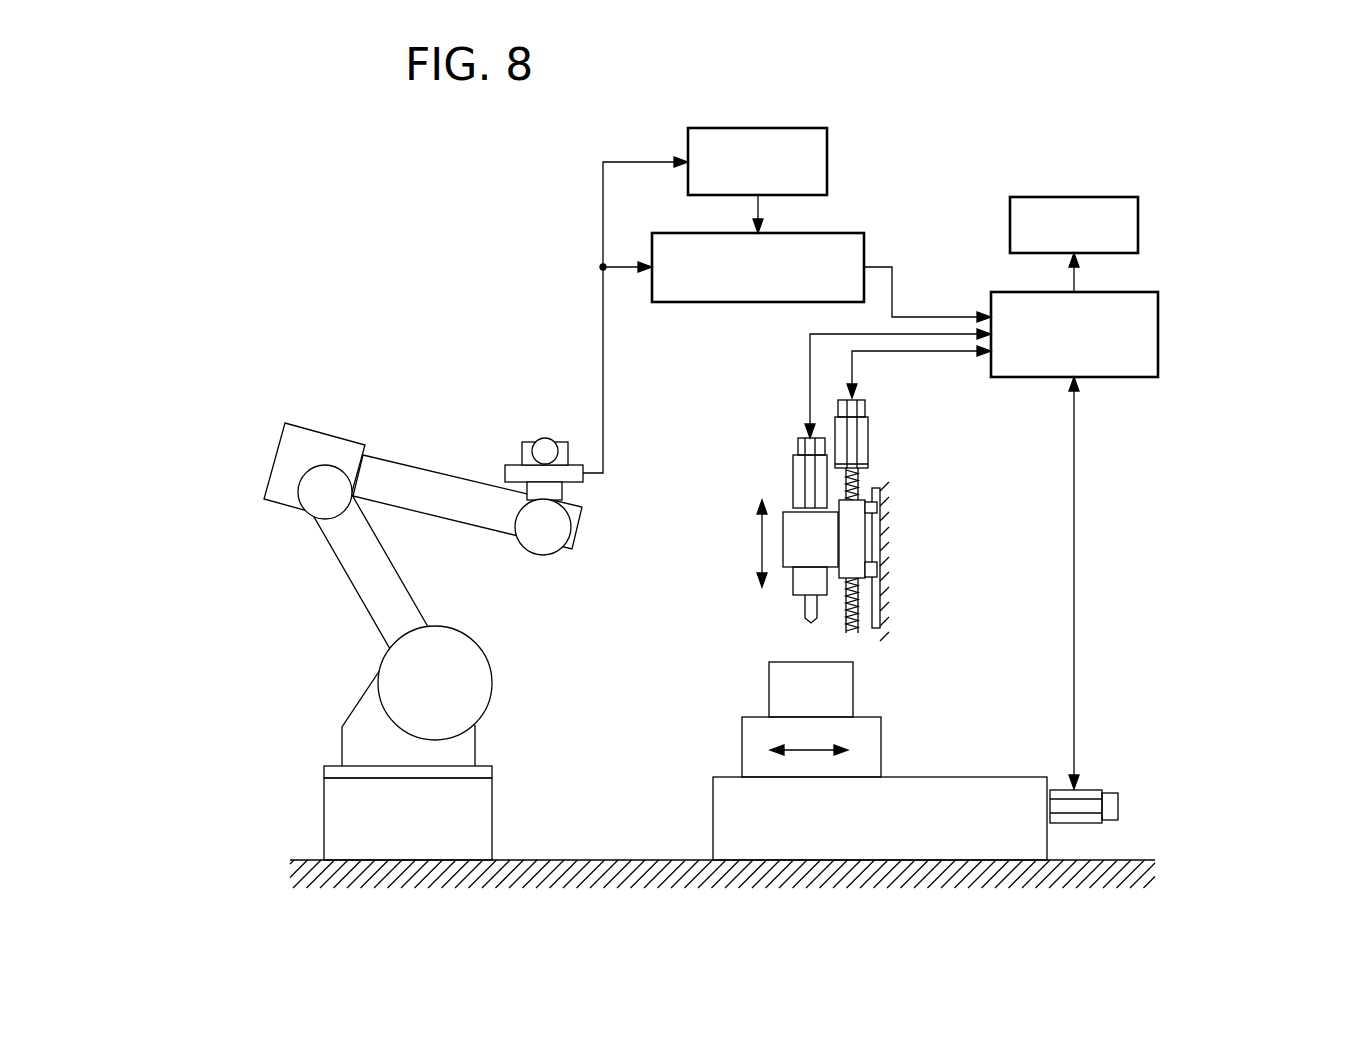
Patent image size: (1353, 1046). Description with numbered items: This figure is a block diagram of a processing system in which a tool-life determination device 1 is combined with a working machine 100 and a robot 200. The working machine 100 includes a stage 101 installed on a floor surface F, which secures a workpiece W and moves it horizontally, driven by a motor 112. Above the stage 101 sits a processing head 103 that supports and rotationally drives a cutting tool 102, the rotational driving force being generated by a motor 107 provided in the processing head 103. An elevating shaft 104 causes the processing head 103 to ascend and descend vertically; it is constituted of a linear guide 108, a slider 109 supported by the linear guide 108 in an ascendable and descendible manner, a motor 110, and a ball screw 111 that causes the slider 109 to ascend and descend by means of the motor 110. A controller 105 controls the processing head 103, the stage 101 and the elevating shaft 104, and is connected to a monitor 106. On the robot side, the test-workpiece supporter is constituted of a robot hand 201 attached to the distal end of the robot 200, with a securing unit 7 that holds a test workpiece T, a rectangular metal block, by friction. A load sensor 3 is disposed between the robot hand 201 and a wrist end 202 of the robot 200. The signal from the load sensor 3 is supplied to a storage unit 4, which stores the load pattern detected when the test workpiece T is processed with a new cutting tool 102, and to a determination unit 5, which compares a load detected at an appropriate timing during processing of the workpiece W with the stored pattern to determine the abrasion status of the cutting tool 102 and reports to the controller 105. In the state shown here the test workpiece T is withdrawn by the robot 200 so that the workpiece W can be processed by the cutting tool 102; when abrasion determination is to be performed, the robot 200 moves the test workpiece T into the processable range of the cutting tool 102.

The tool-life determination device 1 is at (485, 310).
The load sensor 3 is at (547, 497).
The storage unit 4 is at (752, 127).
The determination unit 5 is at (865, 247).
The securing unit 7 is at (528, 412).
The test workpiece T is at (540, 440).
The floor surface F is at (582, 860).
The workpiece W is at (768, 693).
The working machine 100 is at (908, 122).
The stage 101 is at (740, 747).
The cutting tool 102 is at (803, 612).
The processing head 103 is at (792, 585).
The elevating shaft 104 is at (772, 495).
The controller 105 is at (1158, 327).
The monitor 106 is at (1070, 197).
The motor 107 is at (793, 463).
The linear guide 108 is at (882, 598).
The slider 109 is at (867, 537).
The motor 110 is at (870, 440).
The ball screw 111 is at (853, 633).
The motor 112 is at (1120, 807).
The robot 200 is at (306, 400).
The robot hand 201 is at (507, 463).
The wrist end 202 is at (565, 495).